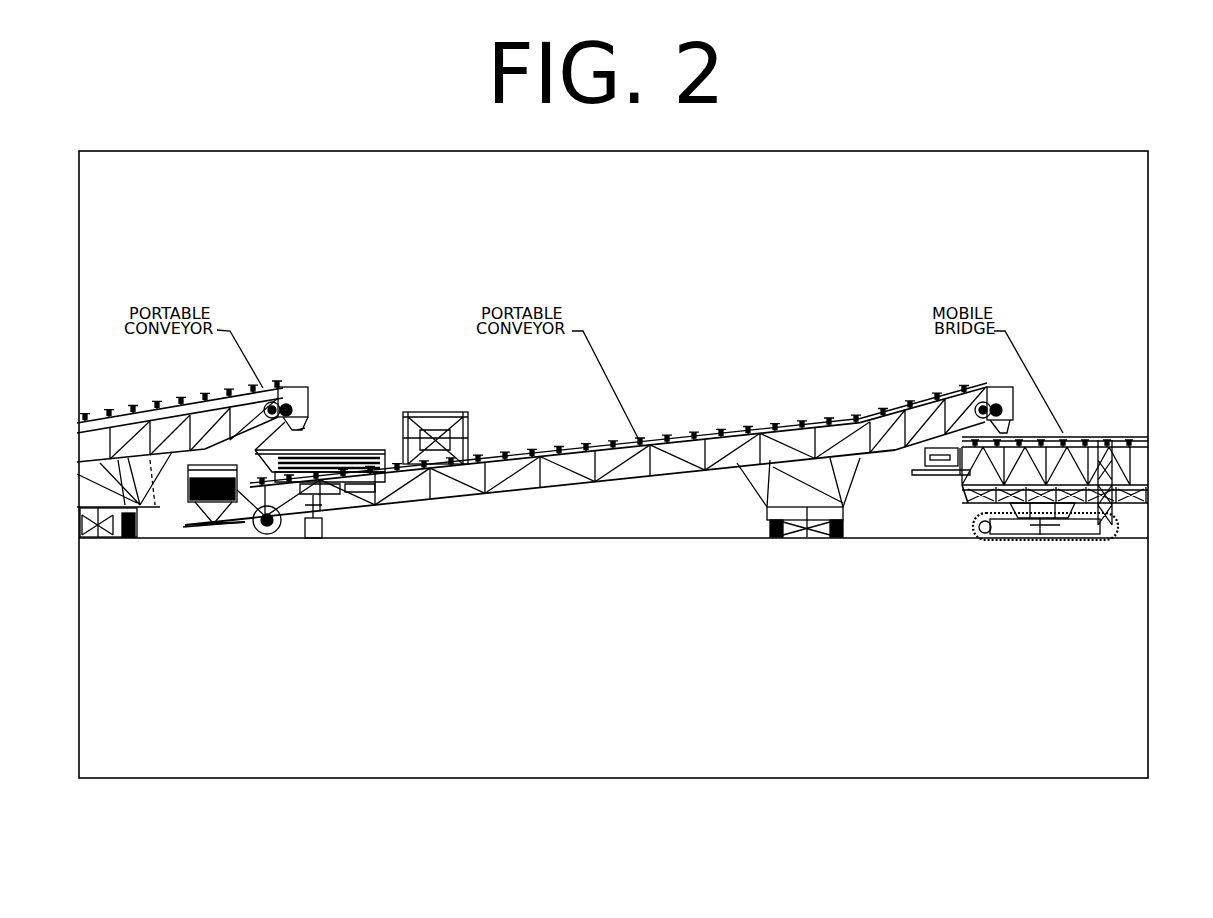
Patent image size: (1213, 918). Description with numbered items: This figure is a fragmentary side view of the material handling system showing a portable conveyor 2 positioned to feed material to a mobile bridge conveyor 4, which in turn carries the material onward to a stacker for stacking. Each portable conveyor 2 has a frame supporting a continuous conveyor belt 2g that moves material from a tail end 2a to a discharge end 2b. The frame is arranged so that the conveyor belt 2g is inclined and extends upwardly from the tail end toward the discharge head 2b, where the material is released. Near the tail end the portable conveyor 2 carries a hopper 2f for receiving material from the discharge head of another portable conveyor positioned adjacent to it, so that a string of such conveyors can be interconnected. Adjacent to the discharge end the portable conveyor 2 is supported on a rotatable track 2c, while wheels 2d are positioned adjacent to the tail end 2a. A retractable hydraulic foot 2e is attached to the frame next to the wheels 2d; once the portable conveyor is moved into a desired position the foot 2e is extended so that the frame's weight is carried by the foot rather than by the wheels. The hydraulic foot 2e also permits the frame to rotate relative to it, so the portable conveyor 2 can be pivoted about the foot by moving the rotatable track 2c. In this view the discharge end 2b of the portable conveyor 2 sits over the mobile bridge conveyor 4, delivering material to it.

The portable conveyor 2 is at (98, 427).
The tail end 2a is at (218, 535).
The discharge end 2b is at (292, 387).
The rotatable track 2c is at (98, 545).
The wheels 2d is at (268, 535).
The retractable hydraulic foot 2e is at (317, 535).
The hopper 2f is at (305, 428).
The conveyor belt 2g is at (750, 433).
The mobile bridge conveyor 4 is at (1065, 545).